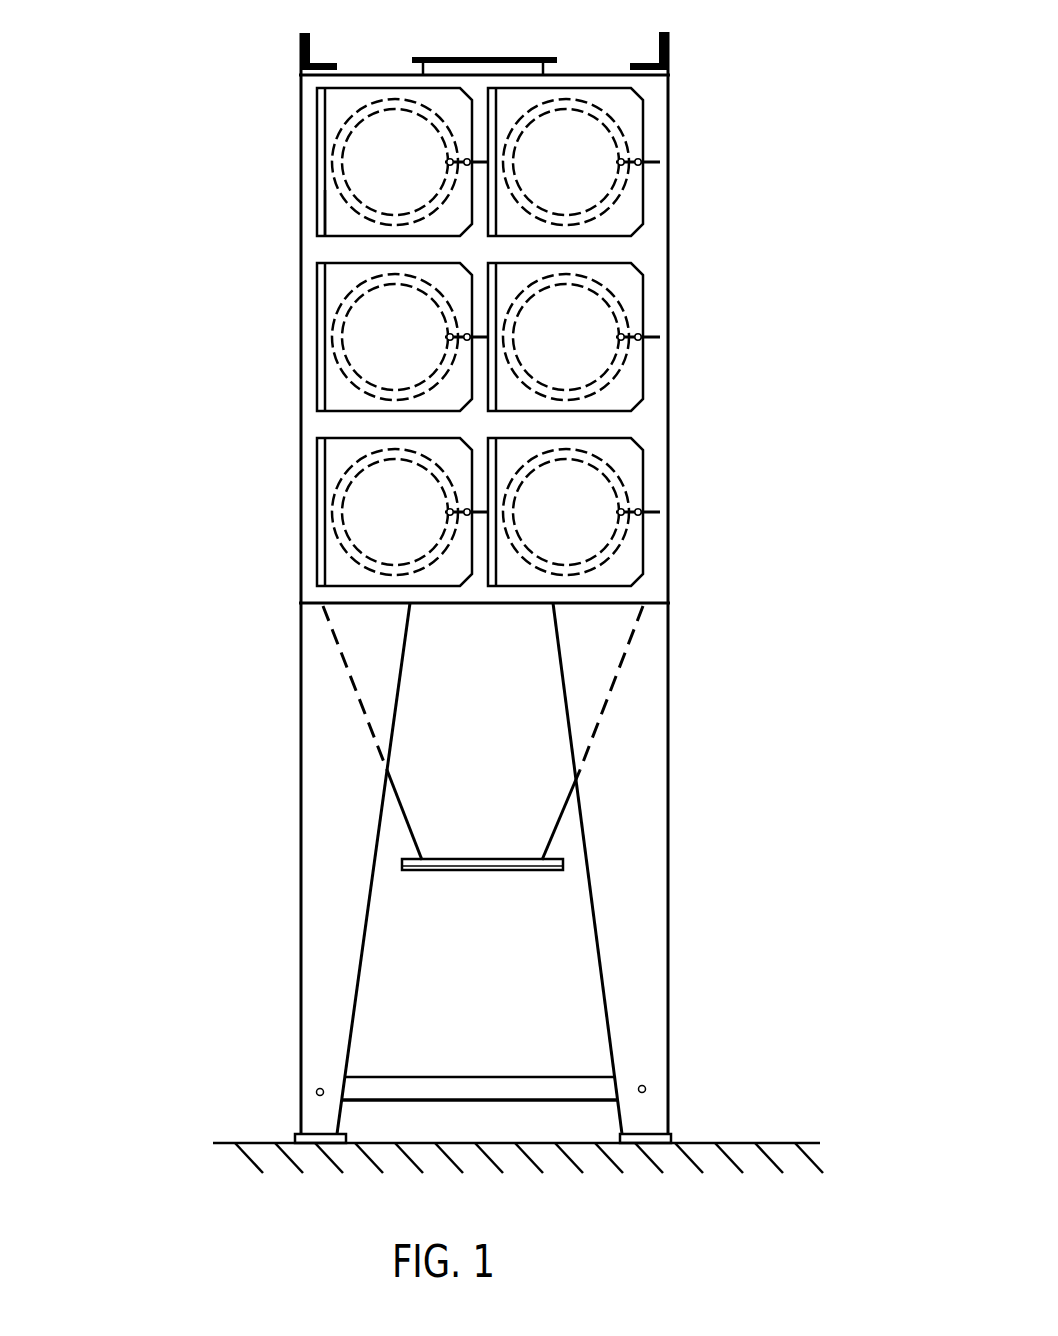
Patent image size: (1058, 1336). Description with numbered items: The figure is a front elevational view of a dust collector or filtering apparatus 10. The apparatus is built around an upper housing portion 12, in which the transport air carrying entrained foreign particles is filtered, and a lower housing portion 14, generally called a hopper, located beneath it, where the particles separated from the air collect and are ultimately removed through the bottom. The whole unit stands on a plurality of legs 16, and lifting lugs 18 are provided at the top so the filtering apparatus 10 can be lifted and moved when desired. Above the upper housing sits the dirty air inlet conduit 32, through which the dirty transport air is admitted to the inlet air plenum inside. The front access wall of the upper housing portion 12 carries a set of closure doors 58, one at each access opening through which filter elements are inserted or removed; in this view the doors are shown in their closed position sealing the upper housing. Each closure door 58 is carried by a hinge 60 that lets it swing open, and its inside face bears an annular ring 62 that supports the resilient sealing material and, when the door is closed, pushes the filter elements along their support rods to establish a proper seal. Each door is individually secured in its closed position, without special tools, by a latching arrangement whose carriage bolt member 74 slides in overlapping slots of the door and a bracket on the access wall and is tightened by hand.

The filtering apparatus 10 is at (288, 478).
The upper housing portion 12 is at (670, 290).
The lower housing portion 14 is at (490, 817).
The legs 16 is at (650, 876).
The lifting lugs 18 is at (670, 57).
The dirty air inlet conduit 32 is at (540, 57).
The closure door 58 is at (349, 100).
The hinge 60 is at (333, 153).
The annular ring 62 is at (328, 208).
The carriage bolt member 74 is at (446, 338).